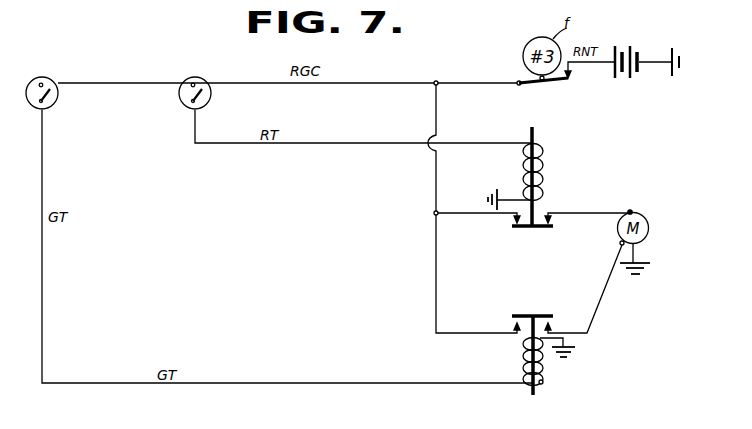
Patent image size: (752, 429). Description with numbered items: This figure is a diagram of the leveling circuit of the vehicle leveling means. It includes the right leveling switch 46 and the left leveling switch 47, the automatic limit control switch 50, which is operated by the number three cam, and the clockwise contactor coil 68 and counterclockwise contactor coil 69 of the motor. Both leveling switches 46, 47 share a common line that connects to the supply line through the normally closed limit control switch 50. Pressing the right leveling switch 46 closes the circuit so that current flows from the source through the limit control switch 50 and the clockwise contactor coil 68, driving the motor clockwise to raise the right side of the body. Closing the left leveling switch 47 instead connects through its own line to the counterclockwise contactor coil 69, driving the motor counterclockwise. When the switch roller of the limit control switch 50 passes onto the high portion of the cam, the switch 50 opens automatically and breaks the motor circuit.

The left leveling switch 47 is at (50, 77).
The right leveling switch 46 is at (204, 77).
The limit control switch 50 is at (576, 66).
The clockwise contactor coil 68 is at (544, 170).
The counterclockwise contactor coil 69 is at (545, 370).